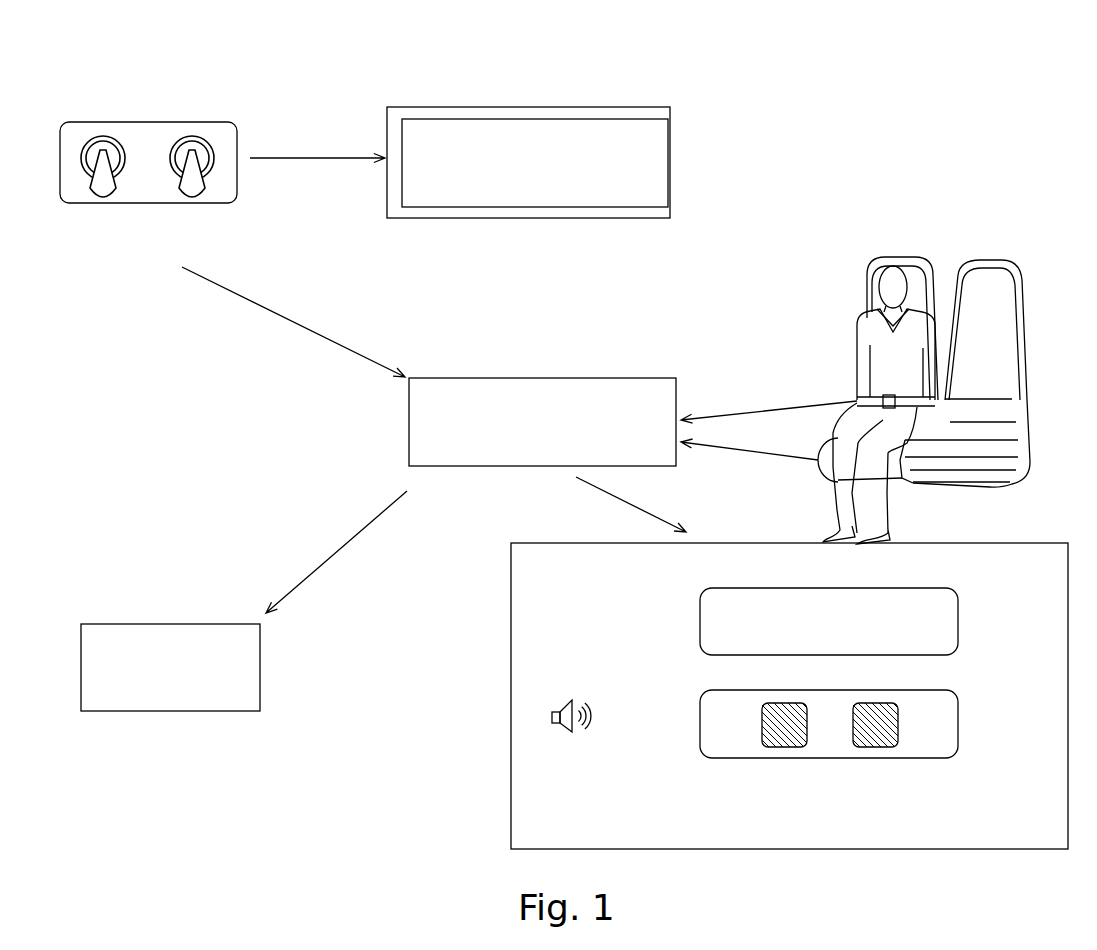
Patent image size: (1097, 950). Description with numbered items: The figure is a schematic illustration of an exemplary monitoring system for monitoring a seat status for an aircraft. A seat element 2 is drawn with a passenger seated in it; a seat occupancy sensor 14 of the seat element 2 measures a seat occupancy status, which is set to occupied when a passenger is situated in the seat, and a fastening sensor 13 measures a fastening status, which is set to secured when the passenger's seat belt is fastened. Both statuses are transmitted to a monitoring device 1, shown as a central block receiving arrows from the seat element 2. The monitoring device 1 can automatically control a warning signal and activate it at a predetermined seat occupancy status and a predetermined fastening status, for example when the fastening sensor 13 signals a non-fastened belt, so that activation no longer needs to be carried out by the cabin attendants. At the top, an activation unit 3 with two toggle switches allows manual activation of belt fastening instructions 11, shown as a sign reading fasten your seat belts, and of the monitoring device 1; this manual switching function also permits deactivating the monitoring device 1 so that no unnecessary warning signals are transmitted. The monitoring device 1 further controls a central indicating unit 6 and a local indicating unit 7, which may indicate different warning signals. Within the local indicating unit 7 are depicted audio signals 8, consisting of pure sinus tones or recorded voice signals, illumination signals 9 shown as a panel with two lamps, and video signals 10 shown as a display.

The monitoring device 1 is at (536, 436).
The seat element 2 is at (985, 282).
The activation unit 3 is at (148, 128).
The central indicating unit 6 is at (160, 682).
The local indicating unit 7 is at (527, 590).
The audio signals 8 is at (563, 733).
The illumination signals 9 is at (830, 750).
The video signals 10 is at (933, 645).
The belt fastening instructions 11 is at (670, 148).
The fastening sensor 13 is at (858, 398).
The seat occupancy sensor 14 is at (826, 466).